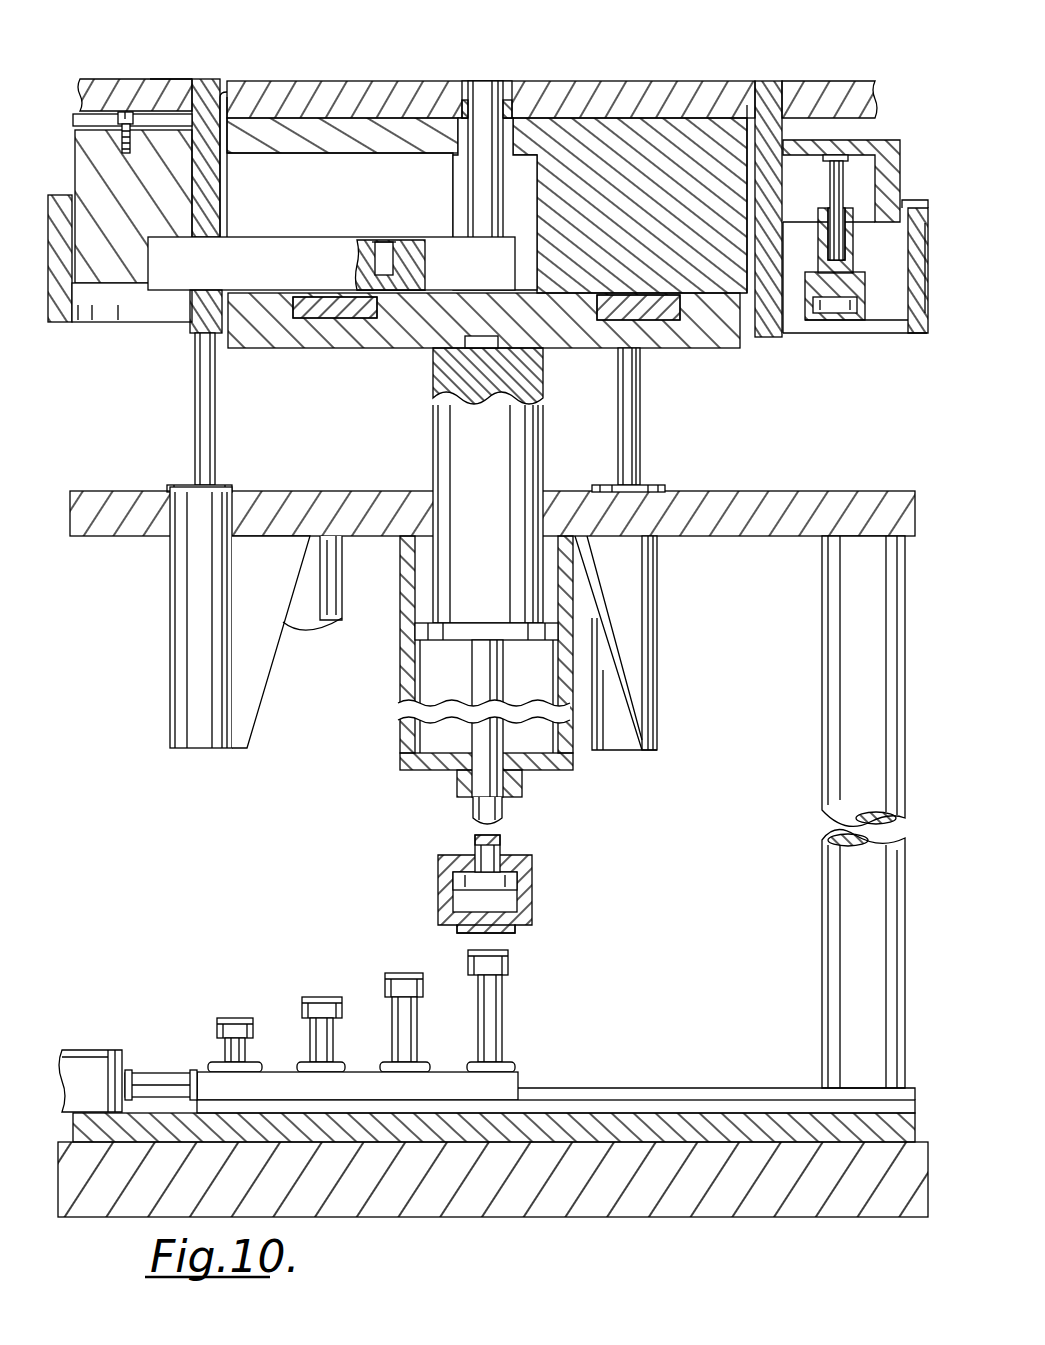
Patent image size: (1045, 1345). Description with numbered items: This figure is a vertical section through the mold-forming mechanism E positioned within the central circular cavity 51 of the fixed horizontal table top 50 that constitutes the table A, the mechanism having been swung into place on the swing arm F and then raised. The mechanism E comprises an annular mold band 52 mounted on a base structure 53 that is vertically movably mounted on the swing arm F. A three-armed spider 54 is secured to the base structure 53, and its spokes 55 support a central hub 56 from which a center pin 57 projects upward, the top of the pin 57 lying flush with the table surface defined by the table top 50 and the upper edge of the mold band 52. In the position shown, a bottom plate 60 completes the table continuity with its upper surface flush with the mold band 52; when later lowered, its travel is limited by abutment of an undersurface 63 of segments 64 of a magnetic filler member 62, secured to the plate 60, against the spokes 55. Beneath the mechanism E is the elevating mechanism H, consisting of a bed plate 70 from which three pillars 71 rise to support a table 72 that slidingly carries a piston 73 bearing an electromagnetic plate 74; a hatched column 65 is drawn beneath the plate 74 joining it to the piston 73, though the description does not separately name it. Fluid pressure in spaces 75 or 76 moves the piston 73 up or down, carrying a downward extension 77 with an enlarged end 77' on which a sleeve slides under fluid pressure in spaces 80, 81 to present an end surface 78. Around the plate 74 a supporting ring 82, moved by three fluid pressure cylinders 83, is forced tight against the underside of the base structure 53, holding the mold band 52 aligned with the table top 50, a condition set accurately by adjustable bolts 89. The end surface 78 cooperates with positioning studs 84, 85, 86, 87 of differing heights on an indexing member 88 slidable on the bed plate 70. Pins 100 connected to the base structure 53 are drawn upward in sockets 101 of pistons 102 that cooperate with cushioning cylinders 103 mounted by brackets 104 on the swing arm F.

The table top 50 is at (98, 83).
The central circular cavity 51 is at (166, 79).
The annular mold band 52 is at (205, 79).
The base structure 53 is at (175, 197).
The three-armed spider 54 is at (173, 263).
The spokes 55 is at (331, 263).
The central hub 56 is at (440, 246).
The center pin 57 is at (483, 90).
The bottom plate 60 is at (585, 81).
The filler member 62 is at (640, 132).
The undersurface 63 is at (288, 153).
The segments 64 is at (271, 128).
The column 65 is at (583, 275).
The bed plate 70 is at (454, 1218).
The pillars 71 is at (322, 582).
The table 72 is at (563, 497).
The piston 73 is at (442, 449).
The electromagnetic plate 74 is at (298, 337).
The space 75 is at (433, 658).
The space 76 is at (427, 602).
The downward extension 77 is at (517, 807).
The enlarged end 77' is at (520, 874).
The end surface 78 is at (504, 932).
The space 80 is at (455, 896).
The space 81 is at (467, 852).
The supporting ring 82 is at (198, 312).
The fluid pressure cylinders 83 is at (172, 672).
The positioning stud 84 is at (497, 963).
The positioning stud 85 is at (403, 972).
The positioning stud 86 is at (321, 997).
The positioning stud 87 is at (236, 1018).
The indexing member 88 is at (207, 1075).
The adjustable bolts 89 is at (73, 118).
The pins 100 is at (832, 187).
The socket 101 is at (838, 240).
The piston 102 is at (818, 246).
The cushioning cylinder 103 is at (804, 319).
The bracket 104 is at (860, 328).
The table A is at (562, 43).
The mold-forming mechanism E is at (376, 78).
The swing arm F is at (912, 207).
The elevating mechanism H is at (362, 705).